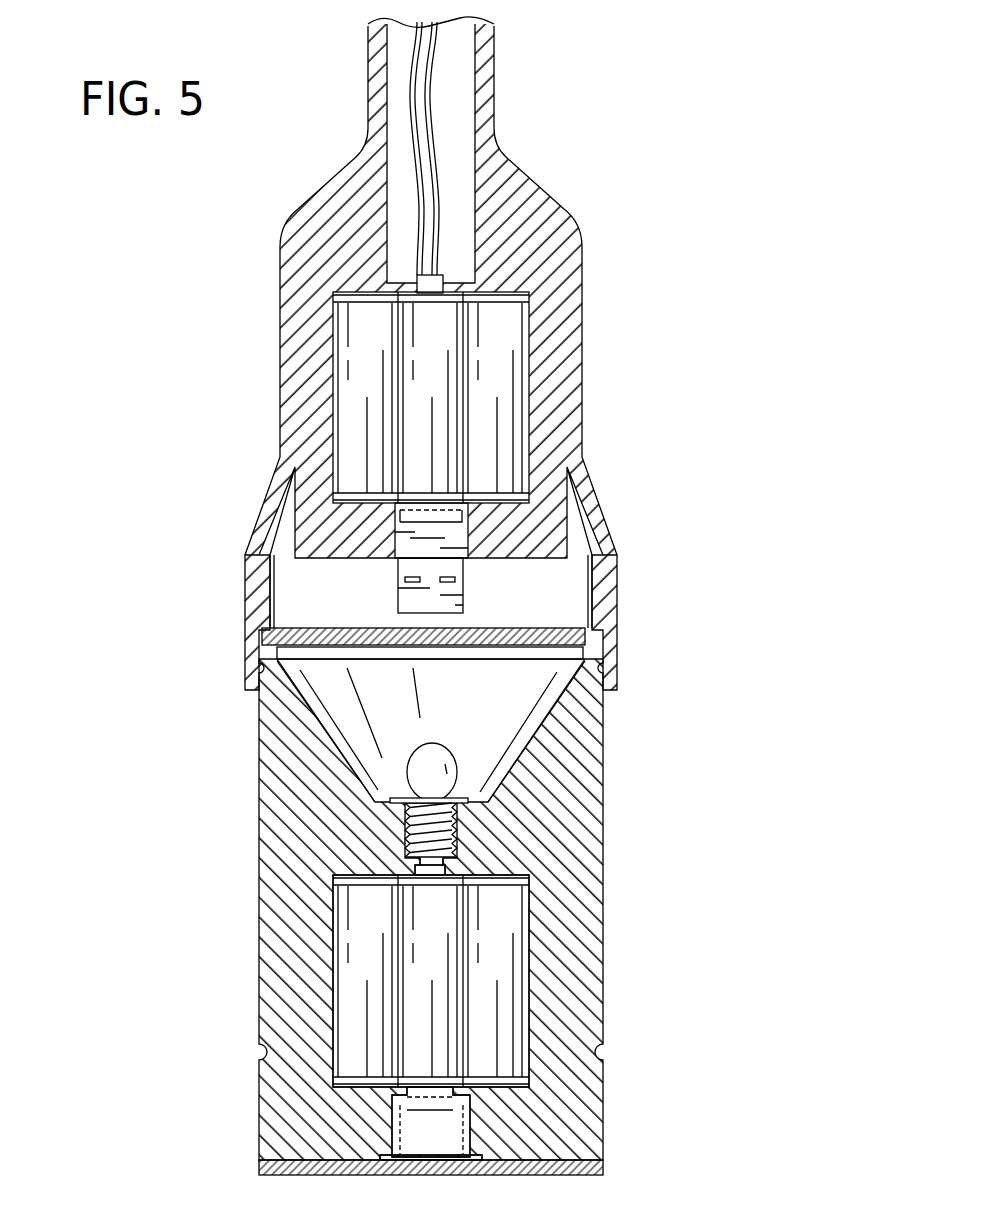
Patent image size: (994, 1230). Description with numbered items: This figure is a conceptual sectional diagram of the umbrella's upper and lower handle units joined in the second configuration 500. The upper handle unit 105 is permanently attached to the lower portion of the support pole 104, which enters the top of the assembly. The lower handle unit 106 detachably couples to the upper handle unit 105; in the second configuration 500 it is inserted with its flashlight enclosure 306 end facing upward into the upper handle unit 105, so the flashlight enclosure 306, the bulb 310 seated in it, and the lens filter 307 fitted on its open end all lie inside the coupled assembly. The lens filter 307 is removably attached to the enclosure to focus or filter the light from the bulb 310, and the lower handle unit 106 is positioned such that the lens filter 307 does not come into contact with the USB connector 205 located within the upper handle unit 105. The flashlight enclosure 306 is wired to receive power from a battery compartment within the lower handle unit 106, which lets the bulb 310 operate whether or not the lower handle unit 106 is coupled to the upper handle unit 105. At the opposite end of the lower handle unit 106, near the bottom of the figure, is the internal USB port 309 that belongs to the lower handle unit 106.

The second configuration 500 is at (682, 173).
The support pole 104 is at (494, 75).
The upper handle unit 105 is at (605, 355).
The lower handle unit 106 is at (622, 881).
The USB connector 205 is at (440, 591).
The flashlight enclosure 306 is at (530, 748).
The lens filter 307 is at (547, 630).
The internal USB port 309 is at (448, 1132).
The bulb 310 is at (420, 773).